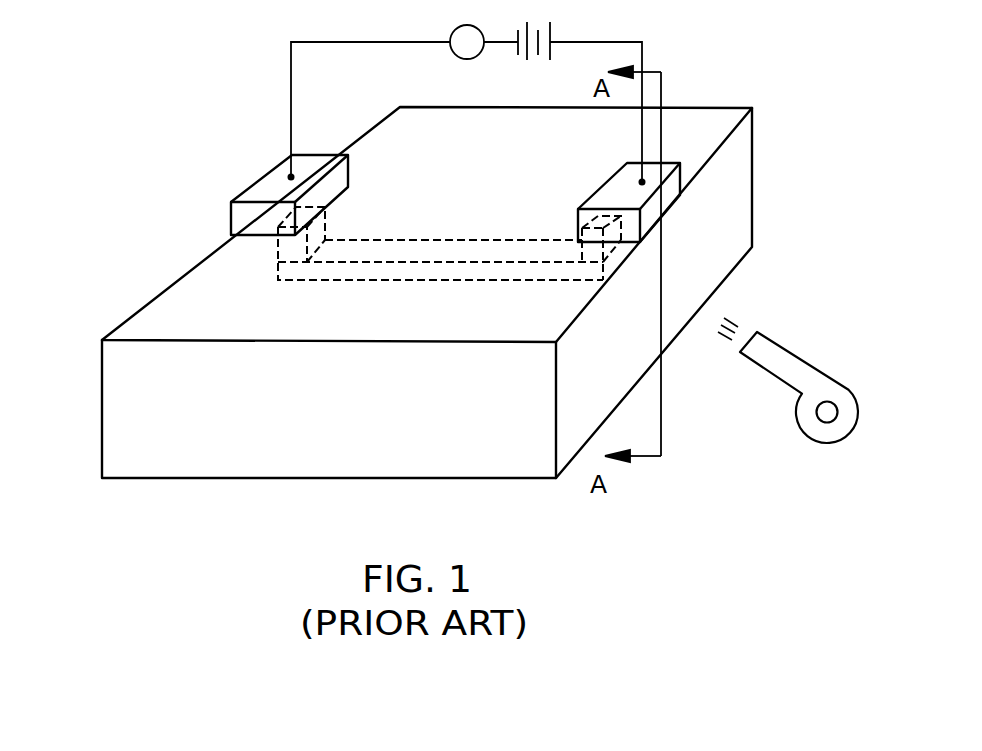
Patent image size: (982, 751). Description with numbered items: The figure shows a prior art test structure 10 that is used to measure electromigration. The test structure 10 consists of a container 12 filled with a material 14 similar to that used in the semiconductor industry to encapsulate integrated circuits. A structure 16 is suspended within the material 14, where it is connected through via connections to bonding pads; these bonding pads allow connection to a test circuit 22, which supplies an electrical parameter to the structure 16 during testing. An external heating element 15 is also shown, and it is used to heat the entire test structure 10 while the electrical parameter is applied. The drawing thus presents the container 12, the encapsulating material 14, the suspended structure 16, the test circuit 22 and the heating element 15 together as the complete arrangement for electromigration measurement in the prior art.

The test structure 10 is at (262, 120).
The container 12 is at (723, 197).
The material 14 is at (163, 318).
The external heating element 15 is at (797, 428).
The structure 16 is at (412, 243).
The test circuit 22 is at (423, 33).